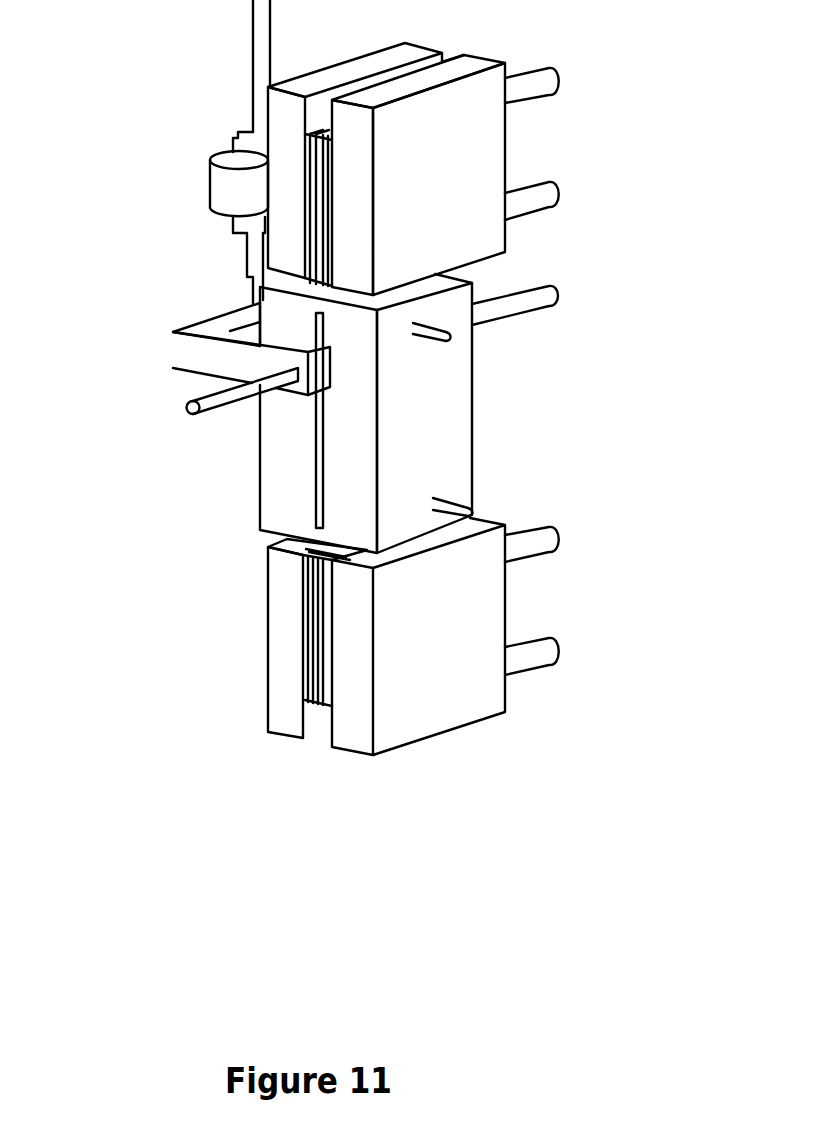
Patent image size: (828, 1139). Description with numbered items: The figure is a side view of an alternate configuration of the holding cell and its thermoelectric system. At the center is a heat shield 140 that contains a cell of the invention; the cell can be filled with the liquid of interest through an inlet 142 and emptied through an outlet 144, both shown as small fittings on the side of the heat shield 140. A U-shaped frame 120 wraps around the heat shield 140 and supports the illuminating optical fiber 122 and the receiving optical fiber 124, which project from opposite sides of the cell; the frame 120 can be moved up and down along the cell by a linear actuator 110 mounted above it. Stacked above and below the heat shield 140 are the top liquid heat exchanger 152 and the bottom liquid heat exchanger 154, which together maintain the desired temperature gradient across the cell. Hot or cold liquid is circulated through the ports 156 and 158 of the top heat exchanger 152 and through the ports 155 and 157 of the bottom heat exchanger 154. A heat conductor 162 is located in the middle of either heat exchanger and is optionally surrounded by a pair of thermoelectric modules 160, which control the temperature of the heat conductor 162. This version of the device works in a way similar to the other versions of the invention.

The linear actuator 110 is at (223, 195).
The U-shaped frame 120 is at (205, 325).
The illuminating optical fiber 122 is at (185, 407).
The receiving optical fiber 124 is at (560, 287).
The heat shield 140 is at (287, 472).
The inlet 142 is at (453, 347).
The outlet 144 is at (467, 510).
The top liquid heat exchanger 152 is at (452, 180).
The bottom liquid heat exchanger 154 is at (445, 685).
The port 155 is at (545, 543).
The port 156 is at (558, 82).
The port 157 is at (550, 660).
The port 158 is at (560, 192).
The thermoelectric module 160 is at (320, 673).
The heat conductor 162 is at (323, 710).